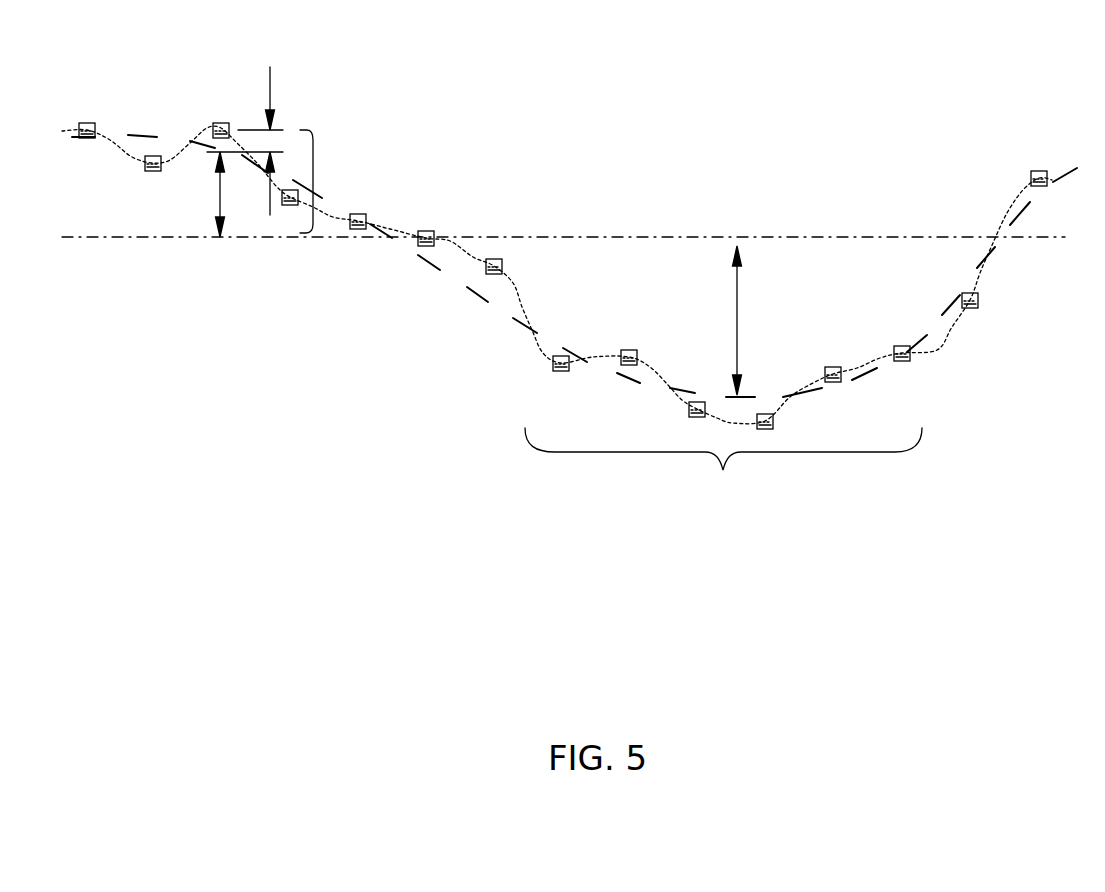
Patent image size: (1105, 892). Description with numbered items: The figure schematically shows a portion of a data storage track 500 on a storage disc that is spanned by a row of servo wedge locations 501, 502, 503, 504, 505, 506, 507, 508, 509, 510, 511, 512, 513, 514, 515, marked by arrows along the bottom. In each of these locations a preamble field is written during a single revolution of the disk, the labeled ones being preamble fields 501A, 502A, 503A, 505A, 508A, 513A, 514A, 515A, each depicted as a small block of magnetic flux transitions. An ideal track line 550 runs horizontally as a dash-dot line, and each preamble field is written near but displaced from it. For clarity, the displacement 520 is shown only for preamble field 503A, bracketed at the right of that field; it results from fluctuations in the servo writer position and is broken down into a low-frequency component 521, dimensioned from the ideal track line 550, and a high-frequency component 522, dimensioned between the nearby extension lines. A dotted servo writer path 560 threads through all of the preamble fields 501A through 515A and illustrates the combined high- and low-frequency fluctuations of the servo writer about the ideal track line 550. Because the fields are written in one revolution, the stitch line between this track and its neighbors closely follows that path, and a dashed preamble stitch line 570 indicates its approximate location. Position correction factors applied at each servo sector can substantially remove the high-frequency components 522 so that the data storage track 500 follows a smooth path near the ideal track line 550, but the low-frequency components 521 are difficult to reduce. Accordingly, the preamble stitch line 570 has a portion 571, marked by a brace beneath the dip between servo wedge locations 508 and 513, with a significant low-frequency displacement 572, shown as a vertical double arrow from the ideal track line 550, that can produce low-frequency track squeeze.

The data storage track 500 is at (690, 80).
The servo wedge location 501 is at (87, 570).
The servo wedge location 502 is at (153, 570).
The servo wedge location 503 is at (221, 570).
The servo wedge location 504 is at (290, 570).
The servo wedge location 505 is at (358, 570).
The servo wedge location 506 is at (426, 570).
The servo wedge location 507 is at (494, 570).
The servo wedge location 508 is at (561, 570).
The servo wedge location 509 is at (629, 570).
The servo wedge location 510 is at (697, 570).
The servo wedge location 511 is at (765, 570).
The servo wedge location 512 is at (833, 570).
The servo wedge location 513 is at (902, 570).
The servo wedge location 514 is at (970, 570).
The servo wedge location 515 is at (1039, 570).
The preamble field 501A is at (85, 120).
The preamble field 502A is at (147, 167).
The preamble field 503A is at (220, 120).
The preamble field 505A is at (358, 230).
The preamble field 508A is at (562, 371).
The preamble field 513A is at (905, 345).
The preamble field 514A is at (968, 309).
The preamble field 515A is at (1035, 170).
The displacement 520 is at (313, 181).
The low-frequency component 521 is at (217, 187).
The high-frequency component 522 is at (270, 92).
The ideal track line 550 is at (653, 237).
The servo writer path 560 is at (520, 292).
The preamble stitch line 570 is at (482, 298).
The portion of preamble stitch line 571 is at (723, 470).
The low-frequency displacement 572 is at (737, 300).